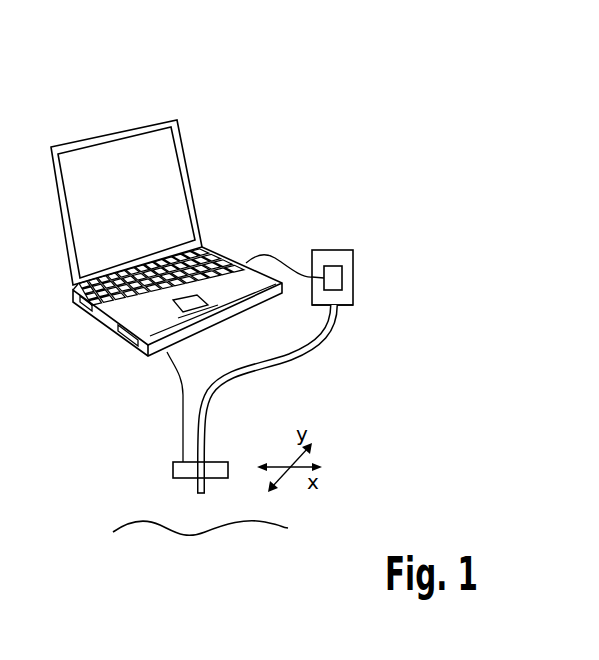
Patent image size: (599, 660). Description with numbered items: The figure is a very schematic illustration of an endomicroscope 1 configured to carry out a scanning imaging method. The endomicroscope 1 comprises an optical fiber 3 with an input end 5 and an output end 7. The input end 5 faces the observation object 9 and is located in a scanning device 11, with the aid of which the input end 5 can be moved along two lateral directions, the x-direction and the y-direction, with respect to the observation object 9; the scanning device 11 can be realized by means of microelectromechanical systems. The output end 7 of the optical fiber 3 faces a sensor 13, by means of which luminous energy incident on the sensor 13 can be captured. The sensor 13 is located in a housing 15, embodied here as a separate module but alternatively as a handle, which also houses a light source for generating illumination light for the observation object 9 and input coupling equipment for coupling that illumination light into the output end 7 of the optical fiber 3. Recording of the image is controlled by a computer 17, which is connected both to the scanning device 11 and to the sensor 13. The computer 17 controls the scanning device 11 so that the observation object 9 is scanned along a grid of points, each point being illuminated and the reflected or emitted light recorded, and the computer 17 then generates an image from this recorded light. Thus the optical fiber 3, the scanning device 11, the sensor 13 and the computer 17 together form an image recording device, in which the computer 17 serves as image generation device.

The endomicroscope 1 is at (383, 397).
The optical fiber 3 is at (305, 352).
The input end 5 is at (197, 503).
The output end 7 is at (353, 297).
The observation object 9 is at (130, 521).
The scanning device 11 is at (172, 468).
The sensor 13 is at (342, 279).
The housing 15 is at (330, 250).
The computer 17 is at (111, 108).